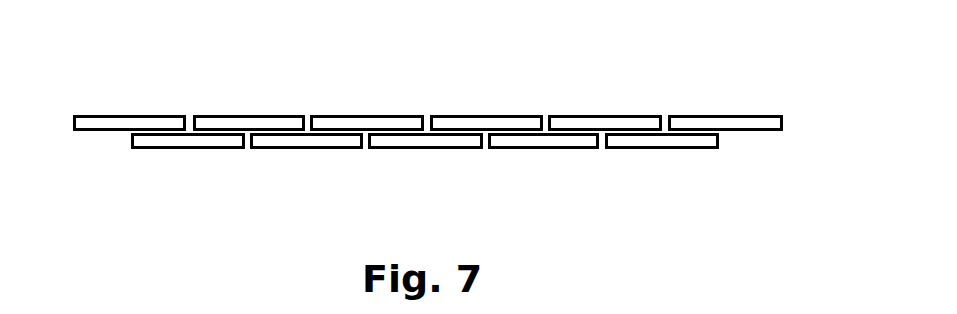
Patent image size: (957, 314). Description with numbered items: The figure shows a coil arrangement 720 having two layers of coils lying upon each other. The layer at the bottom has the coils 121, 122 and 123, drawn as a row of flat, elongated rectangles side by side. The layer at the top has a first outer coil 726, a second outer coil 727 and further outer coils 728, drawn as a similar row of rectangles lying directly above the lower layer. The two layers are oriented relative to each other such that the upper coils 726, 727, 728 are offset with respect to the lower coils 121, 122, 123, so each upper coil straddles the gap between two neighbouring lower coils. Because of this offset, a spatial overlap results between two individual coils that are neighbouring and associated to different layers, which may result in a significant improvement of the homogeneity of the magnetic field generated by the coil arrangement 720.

The coil arrangement 720 is at (787, 71).
The first outer coil 726 is at (138, 97).
The second outer coil 727 is at (242, 97).
The further outer coils 728 is at (362, 97).
The coil 121 is at (187, 165).
The coil 122 is at (306, 165).
The coil 123 is at (423, 165).